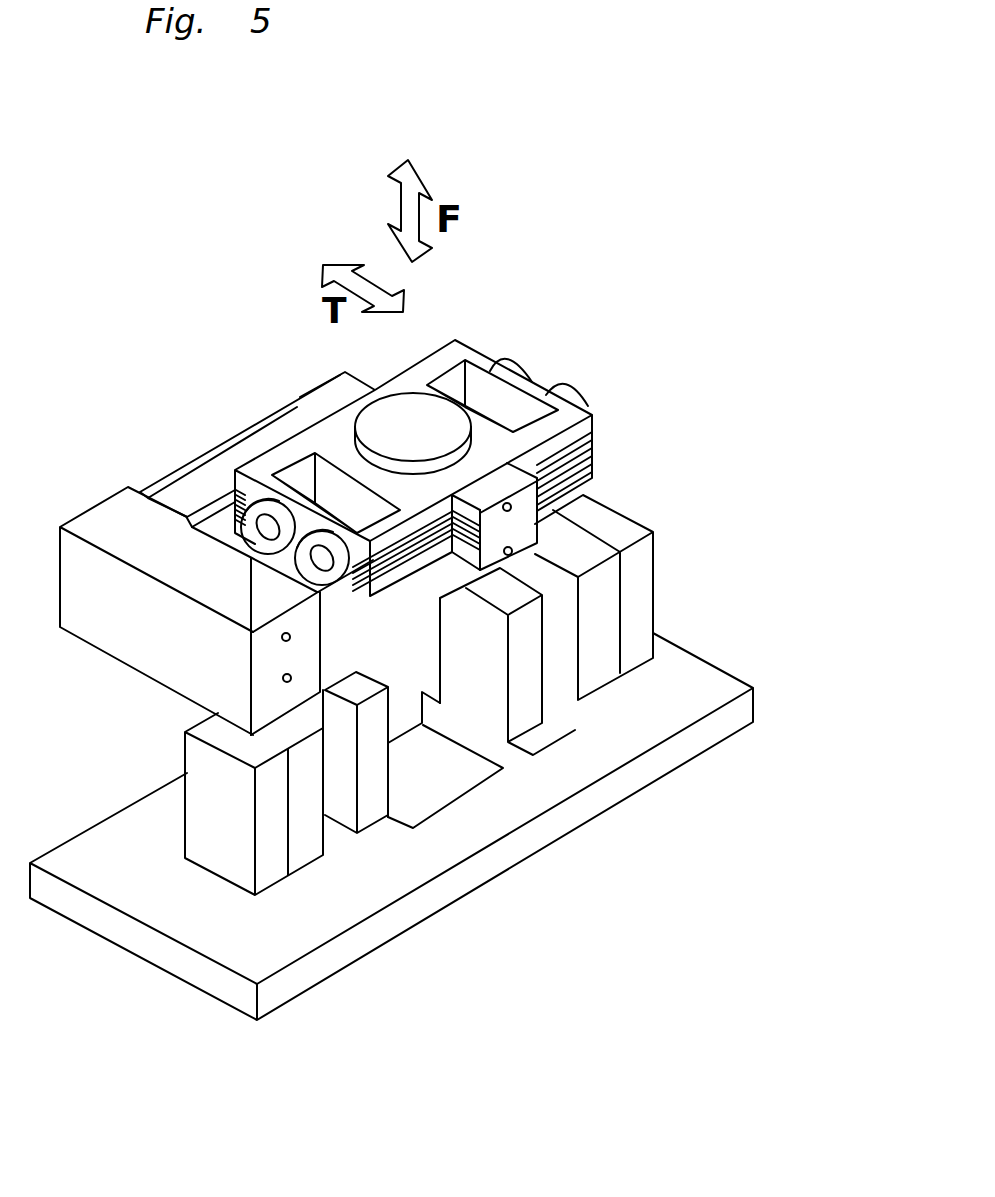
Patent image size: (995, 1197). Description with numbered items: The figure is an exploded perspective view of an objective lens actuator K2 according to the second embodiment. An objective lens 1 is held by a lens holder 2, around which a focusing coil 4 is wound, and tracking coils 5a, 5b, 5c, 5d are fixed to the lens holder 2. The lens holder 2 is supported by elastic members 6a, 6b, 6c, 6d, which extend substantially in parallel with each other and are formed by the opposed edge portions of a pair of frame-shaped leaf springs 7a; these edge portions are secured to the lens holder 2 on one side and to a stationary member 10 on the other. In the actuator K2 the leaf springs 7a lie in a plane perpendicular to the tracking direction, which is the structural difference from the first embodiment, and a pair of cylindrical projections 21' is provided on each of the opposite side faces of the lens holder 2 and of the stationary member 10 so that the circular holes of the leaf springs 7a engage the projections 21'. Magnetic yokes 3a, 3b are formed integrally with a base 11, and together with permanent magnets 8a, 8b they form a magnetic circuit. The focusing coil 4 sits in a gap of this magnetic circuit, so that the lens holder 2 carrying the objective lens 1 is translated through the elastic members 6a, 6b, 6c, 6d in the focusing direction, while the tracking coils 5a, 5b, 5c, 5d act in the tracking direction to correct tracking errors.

The objective lens 1 is at (413, 413).
The lens holder 2 is at (572, 420).
The magnetic yoke 3a is at (480, 660).
The magnetic yoke 3b is at (378, 768).
The focusing coil 4 is at (508, 462).
The tracking coil 5a is at (497, 360).
The tracking coil 5b is at (557, 387).
The tracking coil 5c is at (320, 540).
The tracking coil 5d is at (263, 502).
The elastic member 6a is at (210, 448).
The elastic member 6b is at (202, 507).
The elastic member 6c is at (343, 583).
The elastic member 6d is at (413, 617).
The leaf spring 7a is at (520, 530).
The permanent magnet 8a is at (605, 617).
The permanent magnet 8b is at (303, 810).
The stationary member 10 is at (112, 530).
The base 11 is at (583, 765).
The cylindrical projection 21' is at (408, 575).
The objective lens actuator K2 is at (655, 245).